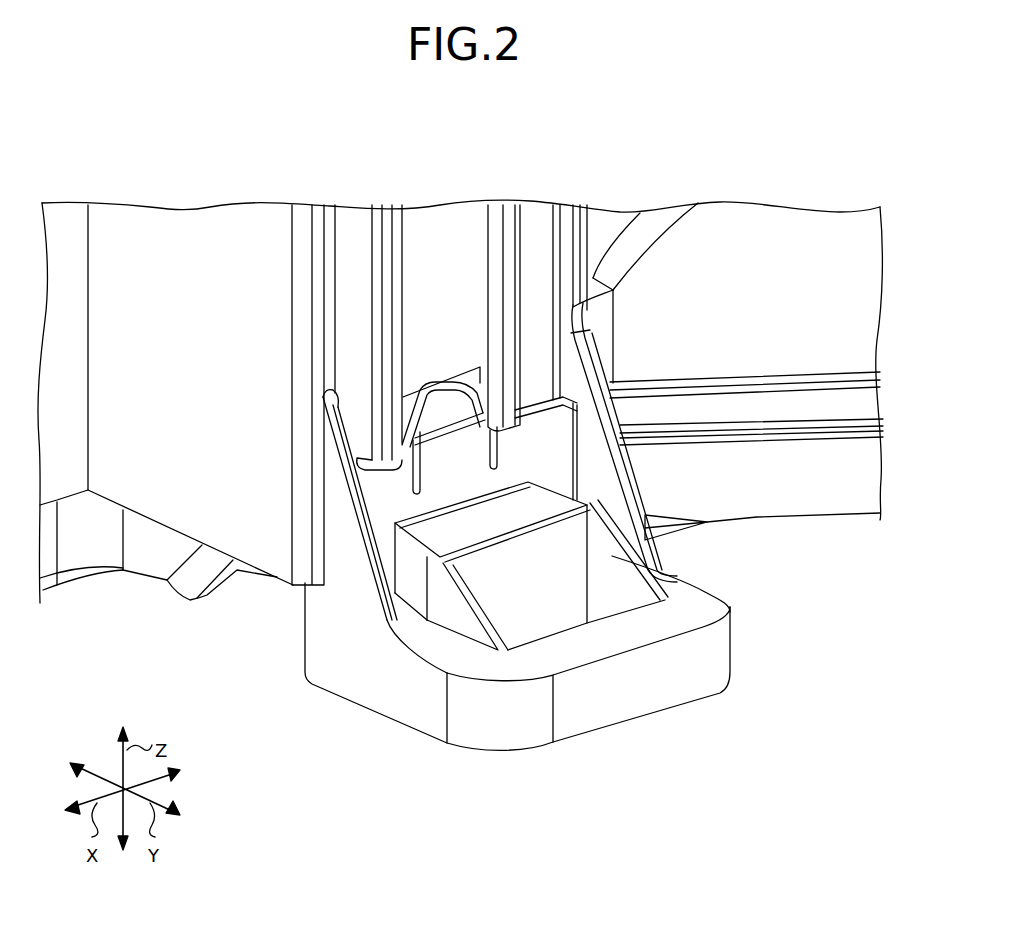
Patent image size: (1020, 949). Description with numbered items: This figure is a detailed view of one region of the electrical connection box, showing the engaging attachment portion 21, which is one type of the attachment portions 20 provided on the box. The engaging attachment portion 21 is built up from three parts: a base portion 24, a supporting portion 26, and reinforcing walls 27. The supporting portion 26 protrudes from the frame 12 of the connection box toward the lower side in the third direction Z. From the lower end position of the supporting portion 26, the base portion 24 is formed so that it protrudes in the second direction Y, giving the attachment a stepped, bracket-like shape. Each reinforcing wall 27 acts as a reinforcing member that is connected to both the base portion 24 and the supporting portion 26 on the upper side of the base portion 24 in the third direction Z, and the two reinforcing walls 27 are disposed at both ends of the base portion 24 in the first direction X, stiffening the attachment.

The frame 12 is at (185, 272).
The attachment portions 20 is at (575, 585).
The engaging attachment portion 21 is at (517, 662).
The base portion 24 is at (653, 680).
The supporting portion 26 is at (540, 445).
The reinforcing walls 27 is at (343, 560).